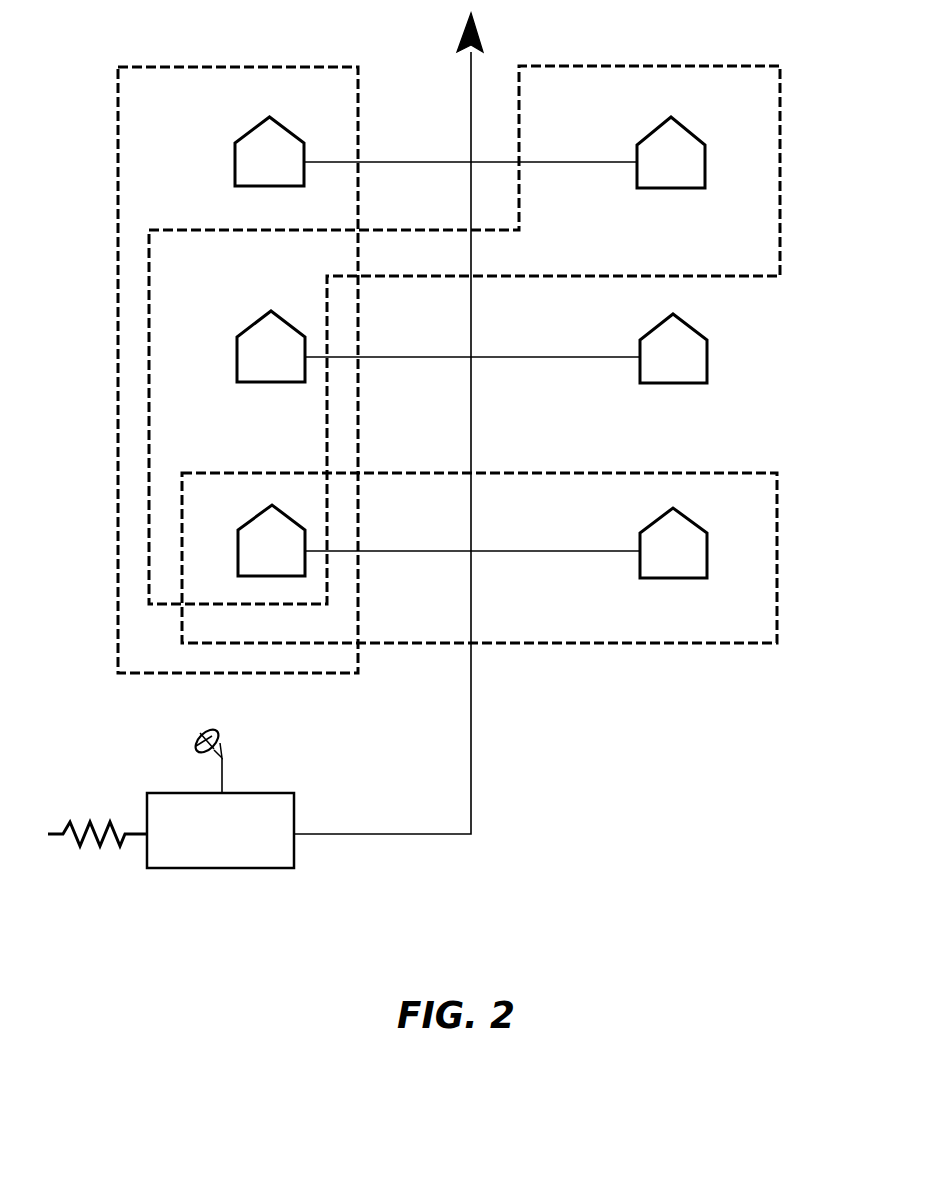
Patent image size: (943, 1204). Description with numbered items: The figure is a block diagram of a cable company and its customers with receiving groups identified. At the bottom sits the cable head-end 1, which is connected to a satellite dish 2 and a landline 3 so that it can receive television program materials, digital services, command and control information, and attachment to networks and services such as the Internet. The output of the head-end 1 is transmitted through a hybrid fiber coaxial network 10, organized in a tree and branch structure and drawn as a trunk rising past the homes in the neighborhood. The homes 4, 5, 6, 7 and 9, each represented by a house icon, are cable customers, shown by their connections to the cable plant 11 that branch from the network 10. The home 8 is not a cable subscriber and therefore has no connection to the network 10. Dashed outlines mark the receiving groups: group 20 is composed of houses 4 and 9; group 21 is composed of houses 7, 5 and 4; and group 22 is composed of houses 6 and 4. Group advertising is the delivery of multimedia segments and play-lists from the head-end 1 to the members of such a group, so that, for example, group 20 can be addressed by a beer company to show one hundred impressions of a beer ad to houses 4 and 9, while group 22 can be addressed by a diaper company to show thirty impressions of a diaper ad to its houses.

The cable head-end 1 is at (273, 792).
The satellite dish 2 is at (225, 745).
The landline 3 is at (102, 813).
The customer home 4 is at (238, 556).
The customer home 5 is at (237, 362).
The customer home 6 is at (235, 167).
The customer home 7 is at (705, 172).
The non-subscriber home 8 is at (707, 368).
The customer home 9 is at (707, 563).
The hybrid fiber coaxial network 10 is at (471, 697).
The cable plant connection 11 is at (383, 162).
The receiving group 20 is at (727, 492).
The receiving group 21 is at (733, 82).
The receiving group 22 is at (240, 83).